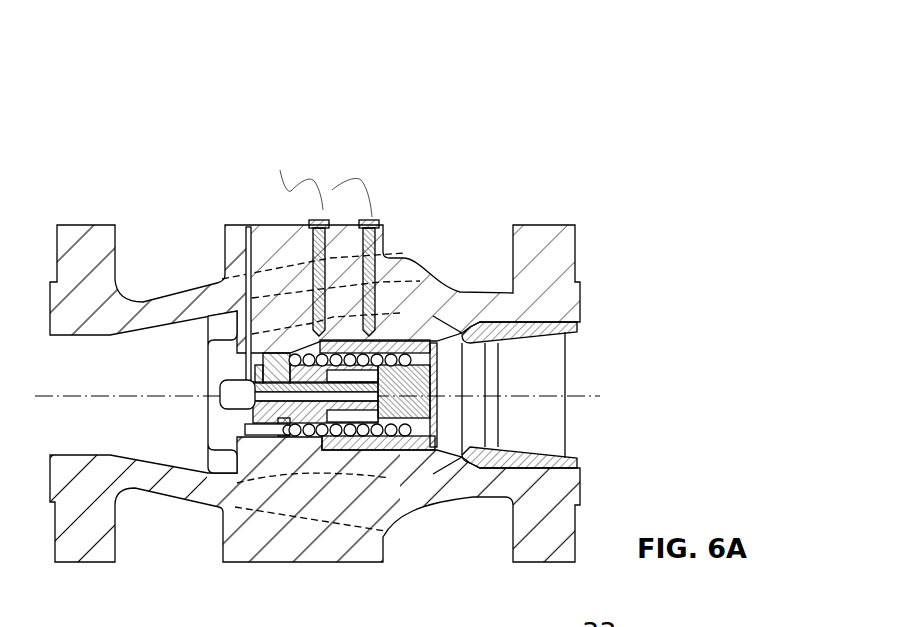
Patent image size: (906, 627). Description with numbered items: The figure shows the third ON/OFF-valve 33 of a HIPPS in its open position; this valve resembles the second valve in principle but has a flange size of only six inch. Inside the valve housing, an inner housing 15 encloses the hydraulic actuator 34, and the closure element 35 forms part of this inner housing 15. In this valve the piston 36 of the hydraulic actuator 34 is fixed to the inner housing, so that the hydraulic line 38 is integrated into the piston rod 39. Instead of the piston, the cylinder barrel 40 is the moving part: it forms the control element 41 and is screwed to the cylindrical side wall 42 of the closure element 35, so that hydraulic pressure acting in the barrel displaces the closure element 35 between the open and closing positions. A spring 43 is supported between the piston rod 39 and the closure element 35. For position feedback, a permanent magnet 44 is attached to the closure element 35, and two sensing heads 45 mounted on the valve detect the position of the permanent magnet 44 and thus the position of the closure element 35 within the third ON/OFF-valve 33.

The third ON/OFF-valve 33 is at (553, 163).
The hydraulic line 38 is at (250, 227).
The sensing heads 45 is at (325, 222).
The closure element 35 is at (408, 324).
The cylindrical side wall 42 is at (400, 348).
The permanent magnet 44 is at (268, 356).
The piston rod 39 is at (236, 406).
The inner housing 15 is at (225, 428).
The hydraulic actuator 34 is at (318, 468).
The spring 43 is at (382, 437).
The piston 36 is at (415, 401).
The cylinder barrel 40 is at (510, 371).
The control element 41 is at (408, 362).